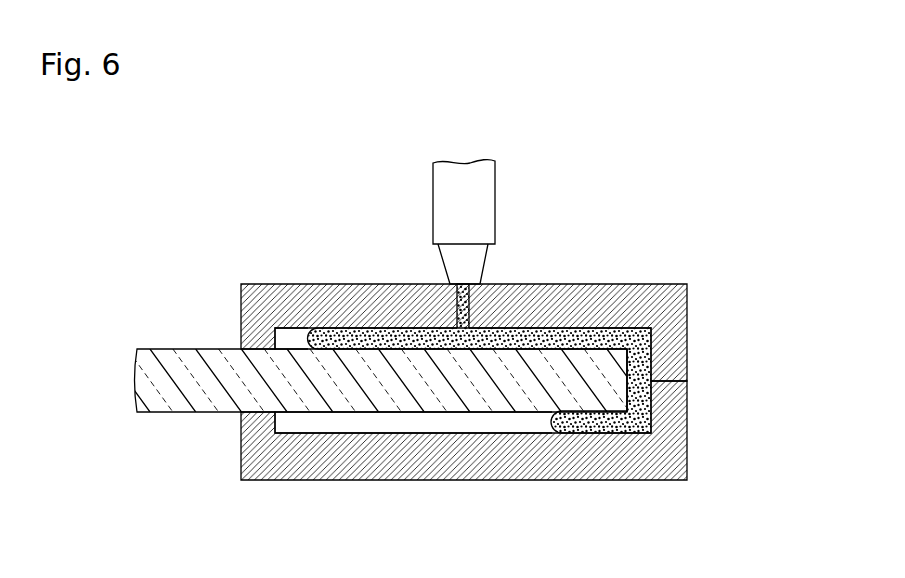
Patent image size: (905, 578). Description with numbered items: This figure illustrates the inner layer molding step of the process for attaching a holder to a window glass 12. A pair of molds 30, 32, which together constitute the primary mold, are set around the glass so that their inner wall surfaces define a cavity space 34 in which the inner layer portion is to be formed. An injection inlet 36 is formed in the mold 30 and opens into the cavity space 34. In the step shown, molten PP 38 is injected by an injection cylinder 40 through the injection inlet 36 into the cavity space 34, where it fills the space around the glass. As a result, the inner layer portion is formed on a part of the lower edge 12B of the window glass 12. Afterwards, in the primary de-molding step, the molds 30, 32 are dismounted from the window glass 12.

The window glass 12 is at (188, 346).
The lower edge of the window glass 12B is at (637, 400).
The mold 30 is at (640, 290).
The mold 32 is at (464, 473).
The cavity space 34 is at (292, 337).
The injection inlet 36 is at (470, 297).
The molten PP 38 is at (368, 340).
The injection cylinder 40 is at (490, 197).